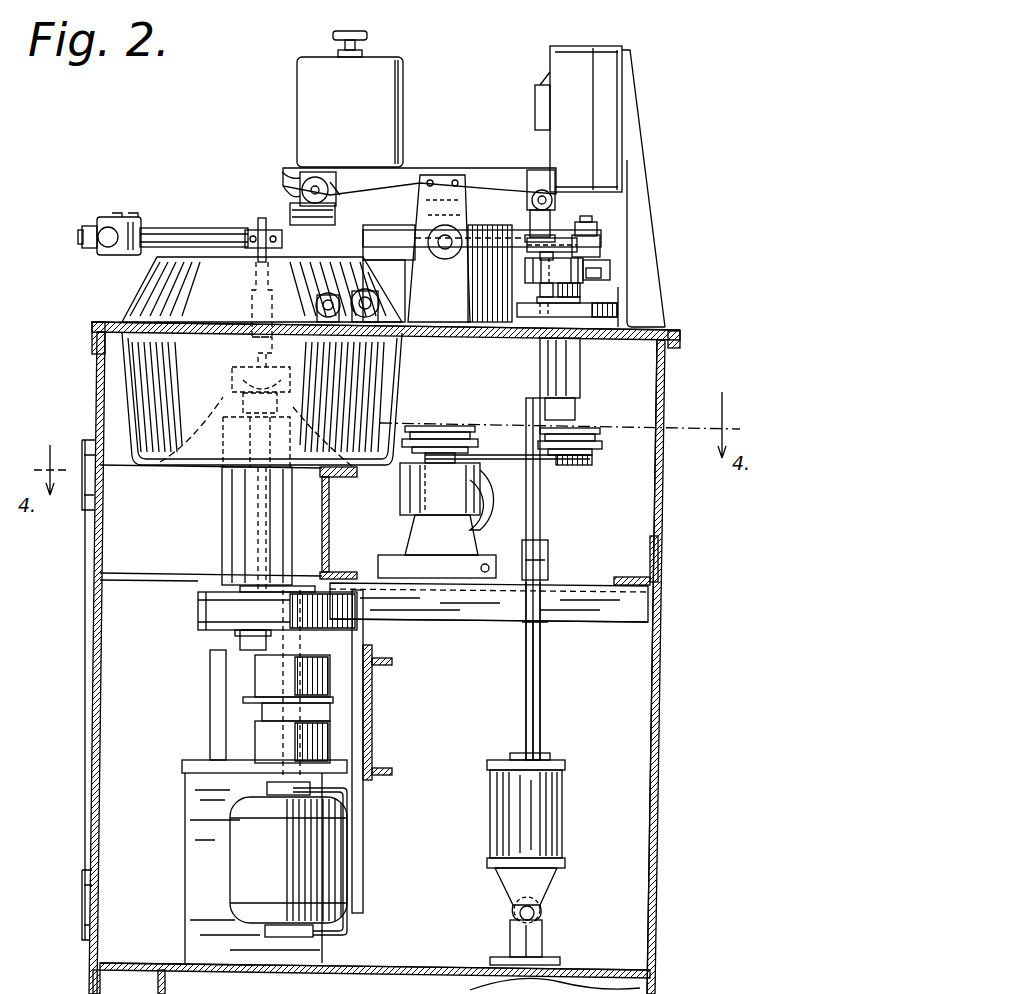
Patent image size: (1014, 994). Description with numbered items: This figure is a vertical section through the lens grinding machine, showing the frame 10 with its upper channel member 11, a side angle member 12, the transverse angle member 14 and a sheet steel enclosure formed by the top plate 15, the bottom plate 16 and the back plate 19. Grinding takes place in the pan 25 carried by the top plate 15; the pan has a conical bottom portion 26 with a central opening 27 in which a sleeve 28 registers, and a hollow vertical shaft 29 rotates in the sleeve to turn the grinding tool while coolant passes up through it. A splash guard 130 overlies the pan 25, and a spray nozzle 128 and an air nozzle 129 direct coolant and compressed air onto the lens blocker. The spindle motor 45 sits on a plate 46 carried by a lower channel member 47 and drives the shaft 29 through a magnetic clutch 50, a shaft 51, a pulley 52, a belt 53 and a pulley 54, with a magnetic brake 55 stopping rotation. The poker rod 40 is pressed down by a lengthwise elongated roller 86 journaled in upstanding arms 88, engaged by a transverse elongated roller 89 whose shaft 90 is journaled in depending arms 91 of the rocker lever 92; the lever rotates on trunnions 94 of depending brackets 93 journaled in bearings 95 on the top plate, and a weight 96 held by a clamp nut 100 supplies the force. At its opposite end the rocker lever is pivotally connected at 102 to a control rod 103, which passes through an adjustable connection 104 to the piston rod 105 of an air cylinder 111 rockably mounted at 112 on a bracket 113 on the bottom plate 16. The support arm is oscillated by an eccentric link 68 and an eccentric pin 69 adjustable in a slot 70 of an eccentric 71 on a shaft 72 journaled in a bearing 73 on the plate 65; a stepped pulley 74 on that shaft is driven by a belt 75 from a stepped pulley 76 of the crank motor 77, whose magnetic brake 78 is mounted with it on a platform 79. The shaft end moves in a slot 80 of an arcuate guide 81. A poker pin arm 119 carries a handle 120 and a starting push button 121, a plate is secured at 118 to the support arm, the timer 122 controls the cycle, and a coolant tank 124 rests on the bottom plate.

The frame 10 is at (706, 333).
The upper channel member 11 is at (331, 512).
The side angle member 12 is at (132, 465).
The transverse angle member 14 is at (648, 562).
The top plate 15 is at (498, 333).
The bottom plate 16 is at (398, 966).
The back plate 19 is at (664, 517).
The pan 25 is at (398, 376).
The conical bottom portion 26 is at (212, 405).
The central opening 27 is at (225, 390).
The sleeve 28 is at (222, 498).
The hollow vertical shaft 29 is at (240, 538).
The poker rod 40 is at (256, 268).
The spindle motor 45 is at (275, 855).
The plate 46 is at (365, 828).
The lower channel member 47 is at (372, 735).
The magnetic clutch 50 is at (255, 740).
The shaft 51 is at (305, 575).
The pulley 52 is at (240, 590).
The belt 53 is at (198, 610).
The pulley 54 is at (240, 634).
The magnetic brake 55 is at (255, 676).
The plate 65 is at (615, 320).
The eccentric link 68 is at (560, 240).
The eccentric pin 69 is at (595, 217).
The slot 70 is at (600, 276).
The eccentric 71 is at (610, 268).
The shaft 72 is at (582, 298).
The bearing 73 is at (580, 365).
The stepped pulley 74 is at (600, 445).
The belt 75 is at (570, 466).
The stepped pulley 76 is at (445, 428).
The crank motor 77 is at (480, 452).
The magnetic brake 78 is at (405, 500).
The platform 79 is at (588, 608).
The slot 80 is at (392, 238).
The arcuate guide 81 is at (389, 273).
The elongated roller 86 is at (280, 194).
The upstanding arms 88 is at (288, 212).
The elongated roller 89 is at (282, 182).
The shaft 90 is at (320, 180).
The depending arms 91 is at (349, 193).
The rocker lever 92 is at (408, 172).
The depending brackets 93 is at (458, 172).
The trunnions 94 is at (444, 258).
The bearings 95 is at (452, 236).
The weight 96 is at (300, 70).
The clamp nut 100 is at (368, 34).
The pivotal connection 102 is at (541, 188).
The control rod 103 is at (548, 512).
The adjustable connection 104 is at (552, 575).
The piston rod 105 is at (545, 718).
The air cylinder 111 is at (562, 828).
The rockable mounting 112 is at (535, 912).
The bracket 113 is at (540, 950).
The securing point 118 is at (360, 592).
The poker pin arm 119 is at (160, 228).
The handle 120 is at (108, 227).
The starting push button 121 is at (80, 238).
The timer 122 is at (630, 32).
The coolant tank 124 is at (200, 826).
The spray nozzle 128 is at (372, 294).
The air nozzle 129 is at (324, 296).
The splash guard 130 is at (235, 303).